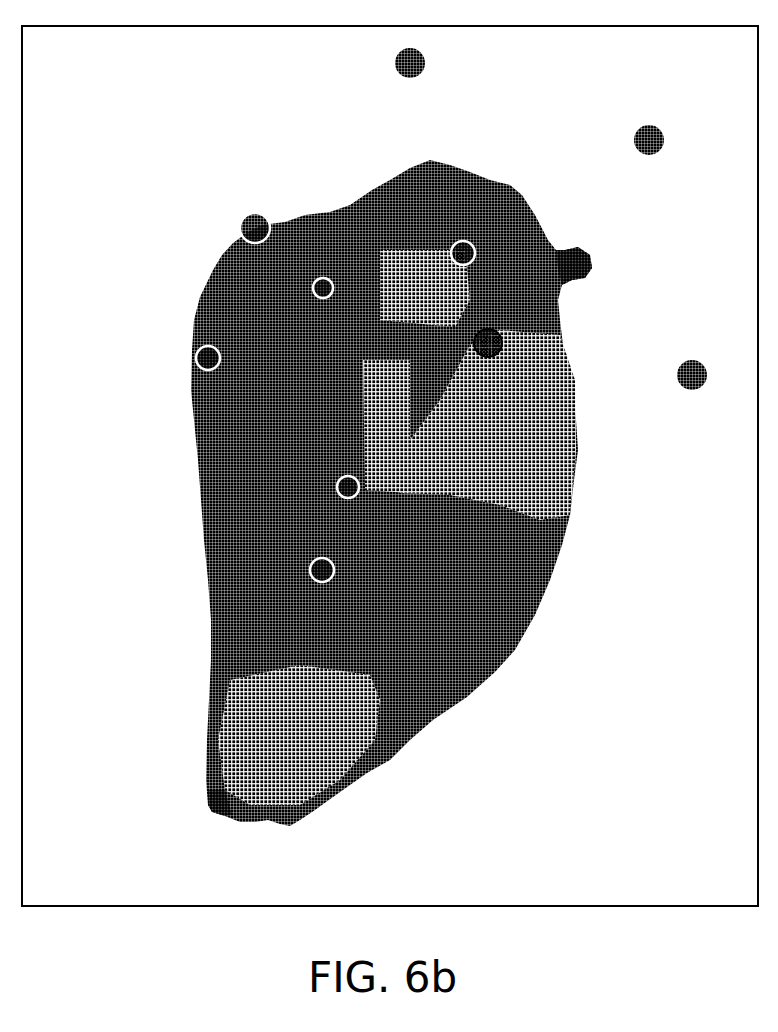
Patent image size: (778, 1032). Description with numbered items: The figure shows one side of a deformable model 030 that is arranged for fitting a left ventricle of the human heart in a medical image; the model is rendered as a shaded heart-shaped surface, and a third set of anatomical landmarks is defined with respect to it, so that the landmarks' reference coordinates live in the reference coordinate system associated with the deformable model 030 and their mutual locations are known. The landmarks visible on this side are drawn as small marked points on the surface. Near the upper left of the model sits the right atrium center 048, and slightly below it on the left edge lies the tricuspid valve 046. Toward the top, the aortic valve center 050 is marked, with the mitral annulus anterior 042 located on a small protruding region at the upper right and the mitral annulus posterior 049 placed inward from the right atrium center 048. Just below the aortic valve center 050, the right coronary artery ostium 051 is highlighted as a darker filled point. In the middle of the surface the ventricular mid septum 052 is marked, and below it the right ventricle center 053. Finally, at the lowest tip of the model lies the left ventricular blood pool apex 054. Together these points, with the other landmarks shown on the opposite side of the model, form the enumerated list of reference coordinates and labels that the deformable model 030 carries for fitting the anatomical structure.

The deformable model 030 is at (527, 630).
The mitral annulus anterior 042 is at (572, 280).
The tricuspid valve 046 is at (194, 357).
The right atrium center 048 is at (258, 213).
The mitral annulus posterior 049 is at (323, 300).
The aortic valve center 050 is at (463, 241).
The right coronary artery ostium 051 is at (489, 357).
The ventricular mid septum 052 is at (347, 476).
The right ventricle center 053 is at (334, 572).
The left ventricular blood pool apex 054 is at (212, 808).